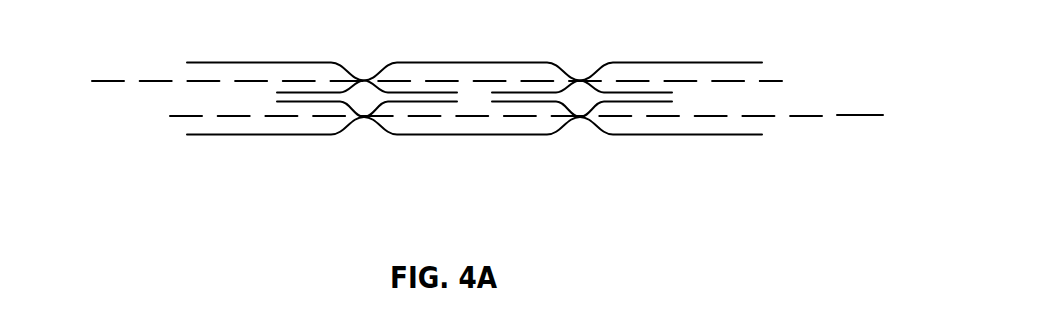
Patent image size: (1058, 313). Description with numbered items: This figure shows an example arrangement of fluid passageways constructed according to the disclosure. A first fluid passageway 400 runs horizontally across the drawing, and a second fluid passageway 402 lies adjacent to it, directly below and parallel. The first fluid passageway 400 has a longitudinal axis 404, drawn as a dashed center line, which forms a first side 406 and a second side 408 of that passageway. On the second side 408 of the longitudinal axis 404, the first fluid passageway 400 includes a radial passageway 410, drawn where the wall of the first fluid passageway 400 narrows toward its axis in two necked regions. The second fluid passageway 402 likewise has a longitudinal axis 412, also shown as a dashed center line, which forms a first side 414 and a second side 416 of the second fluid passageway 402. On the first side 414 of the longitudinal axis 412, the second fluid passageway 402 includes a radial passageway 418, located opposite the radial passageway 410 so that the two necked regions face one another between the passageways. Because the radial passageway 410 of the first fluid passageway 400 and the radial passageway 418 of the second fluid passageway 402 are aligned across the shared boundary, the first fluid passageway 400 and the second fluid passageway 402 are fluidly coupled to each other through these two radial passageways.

The first fluid passageway 400 is at (262, 62).
The second fluid passageway 402 is at (250, 135).
The longitudinal axis 404 is at (782, 81).
The first side 406 is at (401, 81).
The second side 408 is at (77, 81).
The radial passageway 410 is at (478, 94).
The longitudinal axis 412 is at (885, 115).
The first side 414 is at (526, 117).
The second side 416 is at (526, 129).
The radial passageway 418 is at (473, 100).